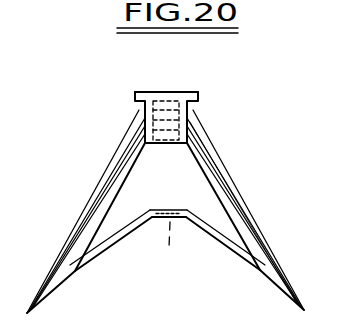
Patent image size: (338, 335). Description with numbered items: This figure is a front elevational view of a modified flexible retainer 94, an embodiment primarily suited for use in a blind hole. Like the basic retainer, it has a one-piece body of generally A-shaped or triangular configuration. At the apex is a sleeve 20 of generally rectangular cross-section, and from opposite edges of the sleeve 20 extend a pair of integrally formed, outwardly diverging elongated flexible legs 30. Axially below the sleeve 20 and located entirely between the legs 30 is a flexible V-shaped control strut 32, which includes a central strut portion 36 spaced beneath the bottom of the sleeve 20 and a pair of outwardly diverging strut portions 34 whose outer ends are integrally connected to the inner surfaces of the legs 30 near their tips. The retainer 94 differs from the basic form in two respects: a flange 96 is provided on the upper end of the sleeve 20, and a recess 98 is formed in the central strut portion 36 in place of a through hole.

The sleeve 20 is at (145, 110).
The flexible legs 30 is at (65, 245).
The control strut 32 is at (114, 248).
The strut portions 34 is at (81, 271).
The central strut portion 36 is at (195, 193).
The modified retainer 94 is at (242, 170).
The flange 96 is at (201, 93).
The recess 98 is at (173, 253).